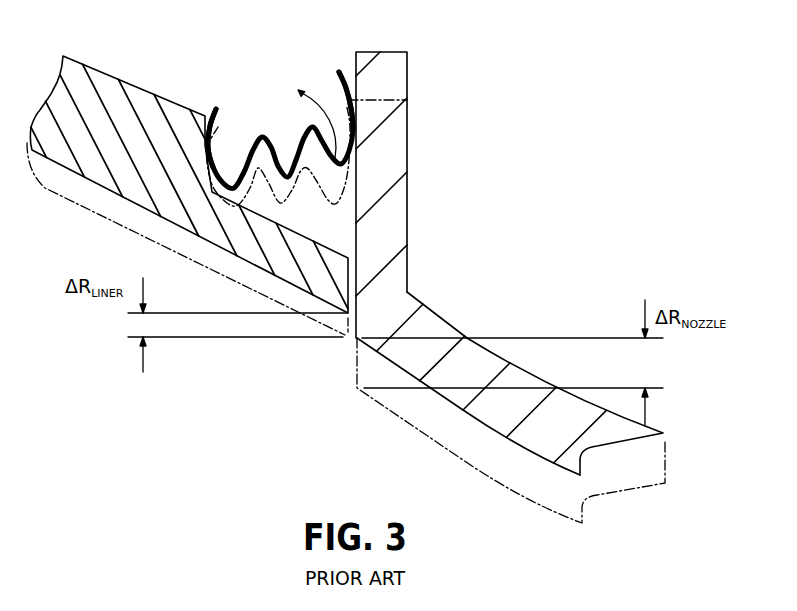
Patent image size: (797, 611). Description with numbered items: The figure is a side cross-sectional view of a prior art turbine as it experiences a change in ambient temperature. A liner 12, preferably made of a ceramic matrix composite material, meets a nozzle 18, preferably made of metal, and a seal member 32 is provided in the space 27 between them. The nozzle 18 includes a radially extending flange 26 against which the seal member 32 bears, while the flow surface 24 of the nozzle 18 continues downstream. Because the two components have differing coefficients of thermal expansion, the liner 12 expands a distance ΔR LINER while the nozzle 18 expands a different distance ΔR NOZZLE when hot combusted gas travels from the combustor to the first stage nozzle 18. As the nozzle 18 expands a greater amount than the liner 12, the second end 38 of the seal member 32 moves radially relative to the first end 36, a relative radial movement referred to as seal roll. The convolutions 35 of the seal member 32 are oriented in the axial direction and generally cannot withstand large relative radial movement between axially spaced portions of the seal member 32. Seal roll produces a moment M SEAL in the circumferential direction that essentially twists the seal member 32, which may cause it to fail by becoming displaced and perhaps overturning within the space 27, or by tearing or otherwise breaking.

The liner 12 is at (109, 70).
The convolutions 35 is at (255, 150).
The first end 36 is at (208, 112).
The seal member 32 is at (334, 68).
The second end 38 is at (346, 95).
The nozzle 18 is at (443, 313).
The nozzle flange 26 is at (388, 225).
The nozzle inner surface 24 is at (460, 360).
The space 27 is at (352, 340).